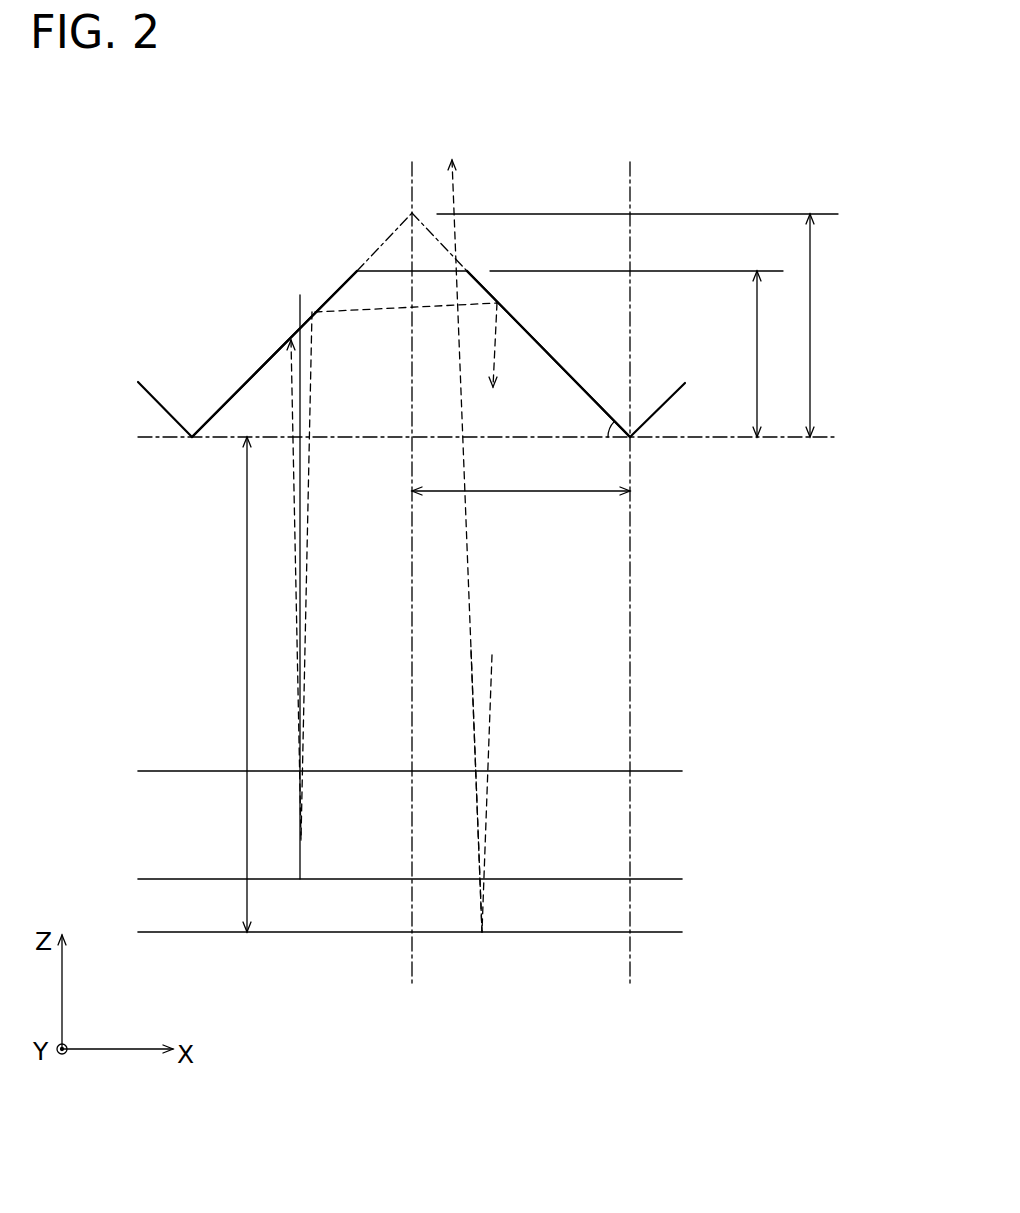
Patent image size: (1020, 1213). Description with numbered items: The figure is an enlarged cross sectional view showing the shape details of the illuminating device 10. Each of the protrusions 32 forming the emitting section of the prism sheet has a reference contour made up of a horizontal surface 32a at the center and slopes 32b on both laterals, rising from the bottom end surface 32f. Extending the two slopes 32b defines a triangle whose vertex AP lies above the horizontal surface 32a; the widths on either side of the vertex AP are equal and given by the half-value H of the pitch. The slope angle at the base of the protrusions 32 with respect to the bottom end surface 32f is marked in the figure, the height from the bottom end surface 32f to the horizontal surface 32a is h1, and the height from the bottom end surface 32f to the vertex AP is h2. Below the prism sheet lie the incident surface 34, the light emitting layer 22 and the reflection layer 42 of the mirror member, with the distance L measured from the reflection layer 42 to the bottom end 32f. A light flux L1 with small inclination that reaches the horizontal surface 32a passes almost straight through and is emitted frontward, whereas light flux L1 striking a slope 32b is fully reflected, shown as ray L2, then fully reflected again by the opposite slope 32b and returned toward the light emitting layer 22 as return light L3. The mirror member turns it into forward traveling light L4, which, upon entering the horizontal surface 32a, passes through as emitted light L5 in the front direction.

The illuminating device 10 is at (812, 107).
The protrusions 32 is at (228, 353).
The horizontal surface 32a is at (378, 270).
The slopes 32b is at (333, 290).
The bottom end surface 32f is at (199, 440).
The vertex AP is at (413, 212).
The light flux L1 is at (293, 558).
The light ray L2 is at (368, 312).
The return light L3 is at (495, 365).
The forward traveling light L4 is at (473, 718).
The emitted light L5 is at (455, 181).
The incident surface 34 is at (668, 771).
The light emitting layer 22 is at (668, 879).
The reflection layer 42 is at (668, 932).
The half-value of the pitch H is at (521, 479).
The distance L is at (238, 684).
The height of the protrusions h1 is at (774, 354).
The height of the triangle h2 is at (828, 325).